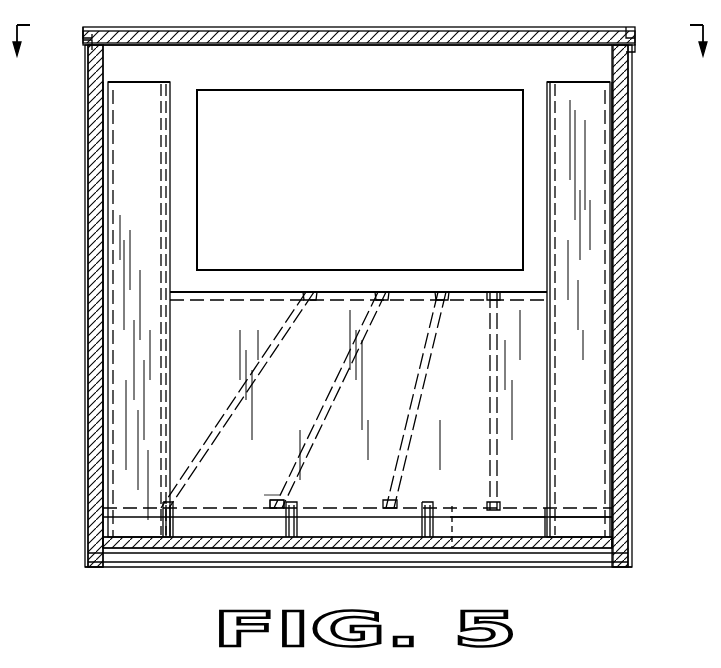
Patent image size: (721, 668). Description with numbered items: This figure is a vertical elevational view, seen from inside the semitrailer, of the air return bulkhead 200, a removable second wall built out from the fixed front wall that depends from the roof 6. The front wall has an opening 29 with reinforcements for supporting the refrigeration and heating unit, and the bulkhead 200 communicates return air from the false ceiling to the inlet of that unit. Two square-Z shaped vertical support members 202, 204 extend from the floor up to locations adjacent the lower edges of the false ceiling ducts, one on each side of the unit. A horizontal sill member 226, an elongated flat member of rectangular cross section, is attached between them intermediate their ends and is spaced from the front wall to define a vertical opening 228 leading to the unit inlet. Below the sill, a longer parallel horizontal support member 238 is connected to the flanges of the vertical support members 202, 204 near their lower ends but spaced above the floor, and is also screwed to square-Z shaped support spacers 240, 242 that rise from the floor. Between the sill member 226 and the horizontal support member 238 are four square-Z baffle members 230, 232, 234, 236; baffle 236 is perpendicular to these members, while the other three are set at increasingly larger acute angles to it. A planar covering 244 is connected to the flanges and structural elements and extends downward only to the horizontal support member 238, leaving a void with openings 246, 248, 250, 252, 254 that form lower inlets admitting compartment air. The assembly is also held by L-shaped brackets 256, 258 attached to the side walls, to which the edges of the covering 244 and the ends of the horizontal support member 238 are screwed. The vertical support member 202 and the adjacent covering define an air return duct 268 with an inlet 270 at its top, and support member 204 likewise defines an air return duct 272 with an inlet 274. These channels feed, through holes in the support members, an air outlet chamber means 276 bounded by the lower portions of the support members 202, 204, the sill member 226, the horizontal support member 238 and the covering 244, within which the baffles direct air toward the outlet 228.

The roof 6 is at (360, 52).
The opening 29 is at (348, 92).
The air return bulkhead 200 is at (145, 578).
The vertical support member 202 is at (168, 150).
The vertical support member 204 is at (548, 147).
The horizontal sill member 226 is at (252, 291).
The vertical opening 228 is at (426, 289).
The baffle support member 230 is at (262, 372).
The baffle support member 232 is at (346, 374).
The baffle support member 234 is at (424, 366).
The baffle support member 236 is at (492, 396).
The horizontal support member 238 is at (452, 556).
The support spacer 240 is at (292, 520).
The support spacer 242 is at (422, 524).
The covering 244 is at (356, 483).
The opening 246 is at (137, 530).
The opening 248 is at (229, 532).
The opening 250 is at (354, 526).
The opening 252 is at (478, 532).
The opening 254 is at (580, 530).
The right-angle bracket 256 is at (103, 254).
The right-angle bracket 258 is at (610, 352).
The air return duct 268 is at (153, 181).
The inlet 270 is at (142, 79).
The air return duct 272 is at (595, 356).
The inlet 274 is at (582, 79).
The air outlet chamber means 276 is at (268, 488).